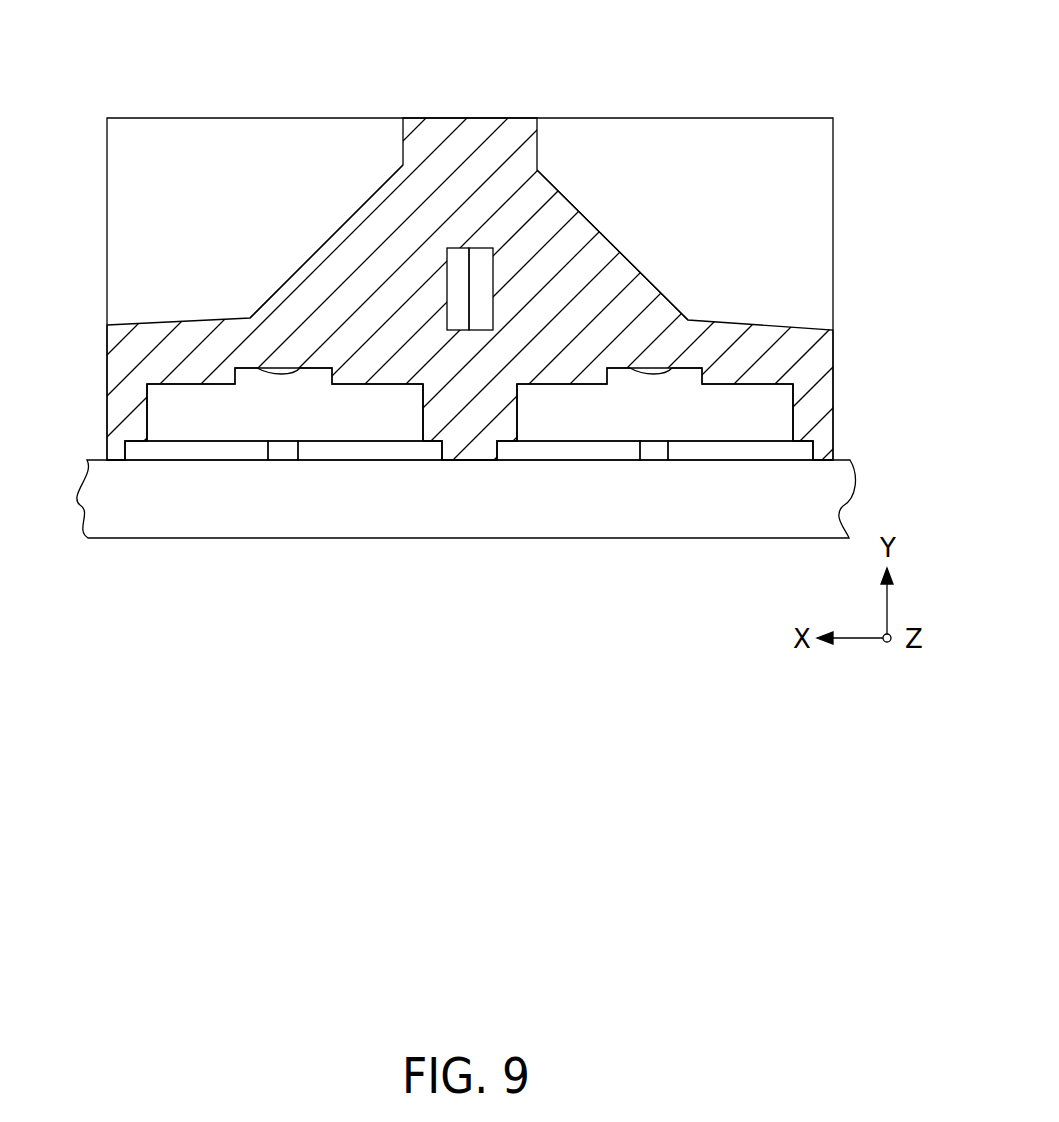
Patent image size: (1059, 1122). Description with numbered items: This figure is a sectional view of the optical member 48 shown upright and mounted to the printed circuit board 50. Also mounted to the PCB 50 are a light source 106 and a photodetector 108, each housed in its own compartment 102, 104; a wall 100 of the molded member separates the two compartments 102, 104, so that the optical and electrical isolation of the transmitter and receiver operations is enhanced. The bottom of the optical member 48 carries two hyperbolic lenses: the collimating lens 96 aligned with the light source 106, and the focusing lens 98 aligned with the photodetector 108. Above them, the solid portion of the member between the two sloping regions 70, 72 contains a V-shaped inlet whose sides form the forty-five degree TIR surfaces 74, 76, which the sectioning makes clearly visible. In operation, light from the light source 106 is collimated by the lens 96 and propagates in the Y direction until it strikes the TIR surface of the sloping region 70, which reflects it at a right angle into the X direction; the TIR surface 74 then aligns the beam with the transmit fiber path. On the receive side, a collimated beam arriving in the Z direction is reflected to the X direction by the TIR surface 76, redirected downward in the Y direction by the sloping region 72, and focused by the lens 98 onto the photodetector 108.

The optical member 48 is at (705, 53).
The printed circuit board 50 is at (190, 525).
The sloping region 70 is at (567, 197).
The sloping region 72 is at (372, 197).
The TIR surface 74 is at (490, 292).
The TIR surface 76 is at (452, 290).
The hyperbolic collimating lens 96 is at (655, 376).
The hyperbolic focusing lens 98 is at (282, 376).
The wall 100 is at (472, 455).
The compartment 102 is at (783, 420).
The compartment 104 is at (158, 417).
The light source 106 is at (658, 455).
The photodetector 108 is at (280, 453).